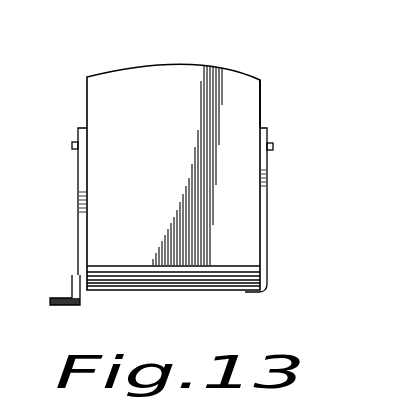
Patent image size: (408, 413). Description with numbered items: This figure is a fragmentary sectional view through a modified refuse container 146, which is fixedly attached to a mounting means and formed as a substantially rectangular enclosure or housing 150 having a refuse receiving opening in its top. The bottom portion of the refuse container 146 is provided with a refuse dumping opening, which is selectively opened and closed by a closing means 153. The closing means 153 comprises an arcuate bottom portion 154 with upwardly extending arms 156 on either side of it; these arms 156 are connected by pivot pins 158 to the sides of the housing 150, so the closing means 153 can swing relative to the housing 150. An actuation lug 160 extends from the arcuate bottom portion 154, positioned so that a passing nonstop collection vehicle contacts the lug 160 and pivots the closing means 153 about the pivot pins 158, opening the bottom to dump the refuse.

The refuse container 146 is at (249, 67).
The housing 150 is at (262, 100).
The closing means 153 is at (205, 291).
The arcuate bottom portion 154 is at (258, 296).
The upwardly extending arms 156 is at (76, 222).
The pivot pins 158 is at (71, 148).
The actuation lug 160 is at (72, 305).